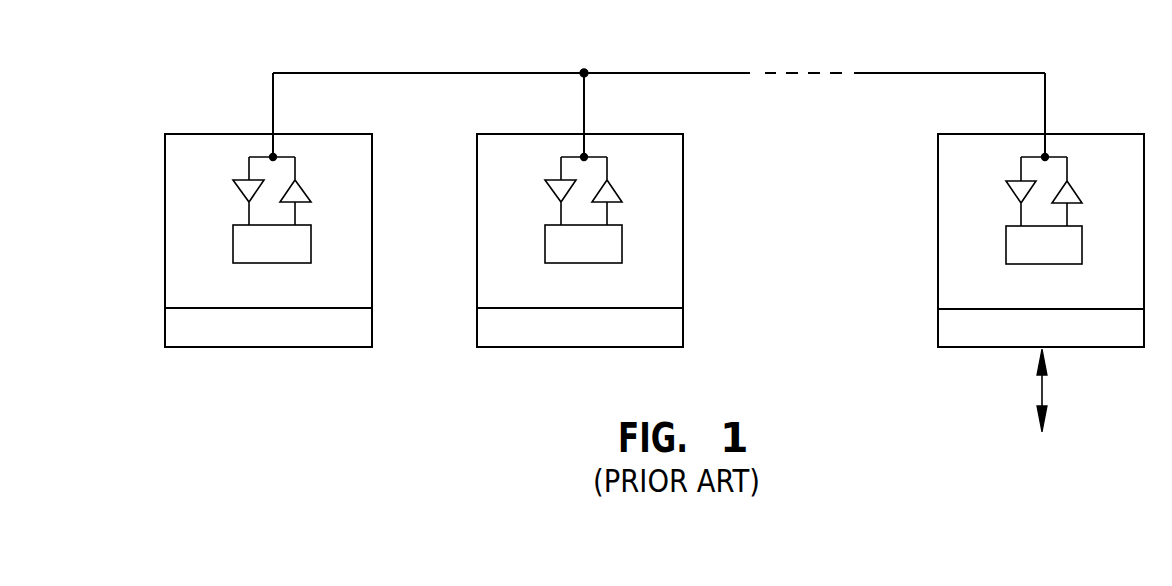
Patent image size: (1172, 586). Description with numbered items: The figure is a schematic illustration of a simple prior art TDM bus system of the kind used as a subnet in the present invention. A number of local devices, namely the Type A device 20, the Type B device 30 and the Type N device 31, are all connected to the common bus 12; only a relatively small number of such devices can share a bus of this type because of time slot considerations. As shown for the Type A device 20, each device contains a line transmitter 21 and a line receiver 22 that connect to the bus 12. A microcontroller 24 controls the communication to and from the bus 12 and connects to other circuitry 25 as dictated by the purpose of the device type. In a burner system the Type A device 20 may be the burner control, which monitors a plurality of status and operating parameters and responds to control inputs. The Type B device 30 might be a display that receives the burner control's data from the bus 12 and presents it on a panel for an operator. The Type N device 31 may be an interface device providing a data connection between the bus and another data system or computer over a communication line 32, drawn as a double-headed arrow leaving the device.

The bus 12 is at (412, 73).
The Type A device 20 is at (242, 240).
The line transmitter 21 is at (235, 193).
The line receiver 22 is at (311, 193).
The microcontroller 24 is at (233, 240).
The other circuitry 25 is at (165, 328).
The Type B device 30 is at (477, 192).
The Type N device 31 is at (938, 193).
The communication line 32 is at (1040, 386).